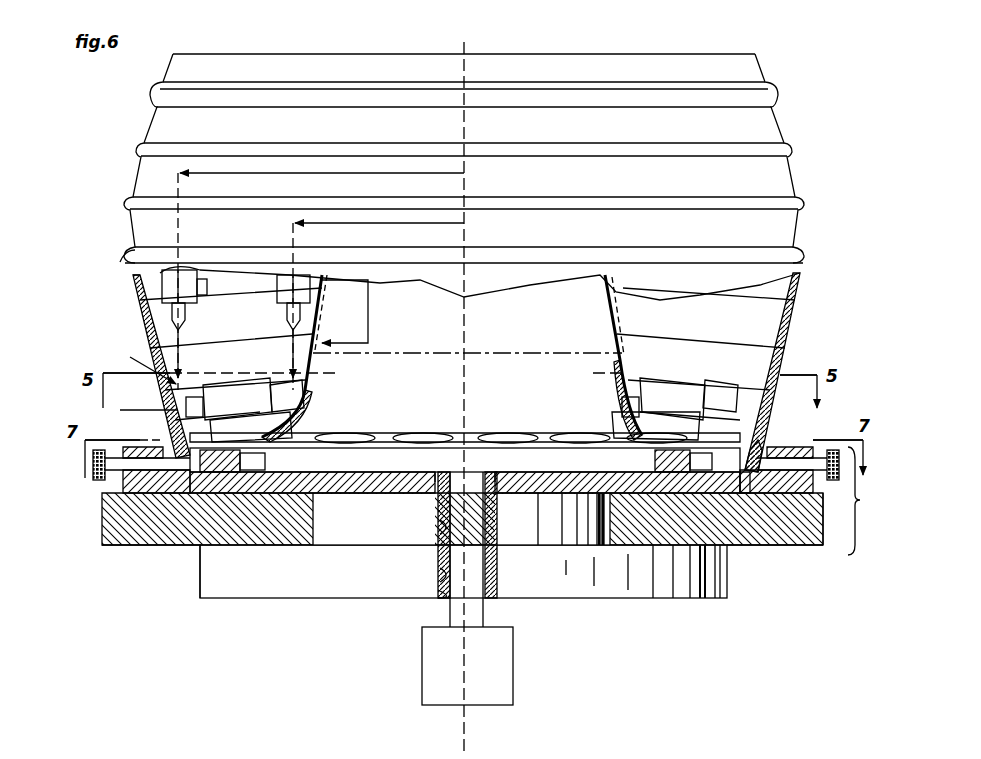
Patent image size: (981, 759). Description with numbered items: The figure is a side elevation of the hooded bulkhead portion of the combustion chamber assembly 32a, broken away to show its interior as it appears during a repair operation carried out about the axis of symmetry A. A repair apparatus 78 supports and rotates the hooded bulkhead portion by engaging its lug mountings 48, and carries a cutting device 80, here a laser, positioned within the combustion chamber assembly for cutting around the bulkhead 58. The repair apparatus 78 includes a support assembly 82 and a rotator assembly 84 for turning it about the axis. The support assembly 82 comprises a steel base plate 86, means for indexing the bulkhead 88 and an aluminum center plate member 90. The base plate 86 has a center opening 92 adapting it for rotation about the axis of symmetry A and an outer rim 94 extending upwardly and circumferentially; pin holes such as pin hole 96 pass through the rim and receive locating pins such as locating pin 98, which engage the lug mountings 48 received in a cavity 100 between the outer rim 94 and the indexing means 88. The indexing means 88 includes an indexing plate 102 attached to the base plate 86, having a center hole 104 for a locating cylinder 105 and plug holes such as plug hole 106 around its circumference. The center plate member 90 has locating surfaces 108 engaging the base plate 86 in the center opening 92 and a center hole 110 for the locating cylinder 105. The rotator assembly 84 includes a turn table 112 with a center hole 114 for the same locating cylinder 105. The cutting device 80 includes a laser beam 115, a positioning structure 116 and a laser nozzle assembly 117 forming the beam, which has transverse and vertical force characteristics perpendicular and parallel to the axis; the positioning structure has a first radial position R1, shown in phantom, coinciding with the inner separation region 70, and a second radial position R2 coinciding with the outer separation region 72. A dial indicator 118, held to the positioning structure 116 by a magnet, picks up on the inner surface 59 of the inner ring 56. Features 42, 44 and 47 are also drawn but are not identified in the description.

The axis of symmetry A is at (466, 46).
The combustion chamber assembly 32a is at (133, 176).
The tank bottom corner 44 is at (138, 180).
The second radial position R2 is at (321, 276).
The first radial position R1 is at (378, 301).
The positioning structure 116 is at (158, 272).
The dial indicator 118 is at (272, 270).
The laser beam 115 is at (170, 340).
The laser nozzle assembly 117 is at (175, 332).
The cutting device 80 is at (155, 290).
The fixture 42 is at (452, 356).
The inner surface 59 is at (318, 350).
The inner ring 56 is at (626, 358).
The bulkhead 58 is at (748, 405).
The outer rim 94 is at (772, 445).
The outer separation region 72 is at (190, 392).
The inner separation region 70 is at (298, 388).
The support plate 47 is at (352, 418).
The indexing plate 102 is at (560, 478).
The plug hole 106 is at (255, 462).
The center hole 104 is at (438, 480).
The center opening 92 is at (335, 490).
The locating pin 98 is at (105, 483).
The lug mountings 48 is at (185, 478).
The pin hole 96 is at (800, 478).
The cavity 100 is at (765, 495).
The locating surfaces 108 is at (312, 518).
The center plate member 90 is at (525, 530).
The turn table 112 is at (548, 588).
The center hole 110 is at (445, 530).
The center hole 114 is at (445, 578).
The locating cylinder 105 is at (460, 666).
The means for indexing the bulkhead 88 is at (500, 462).
The base plate 86 is at (785, 535).
The support assembly 82 is at (868, 501).
The rotator assembly 84 is at (176, 592).
The repair apparatus 78 is at (760, 594).